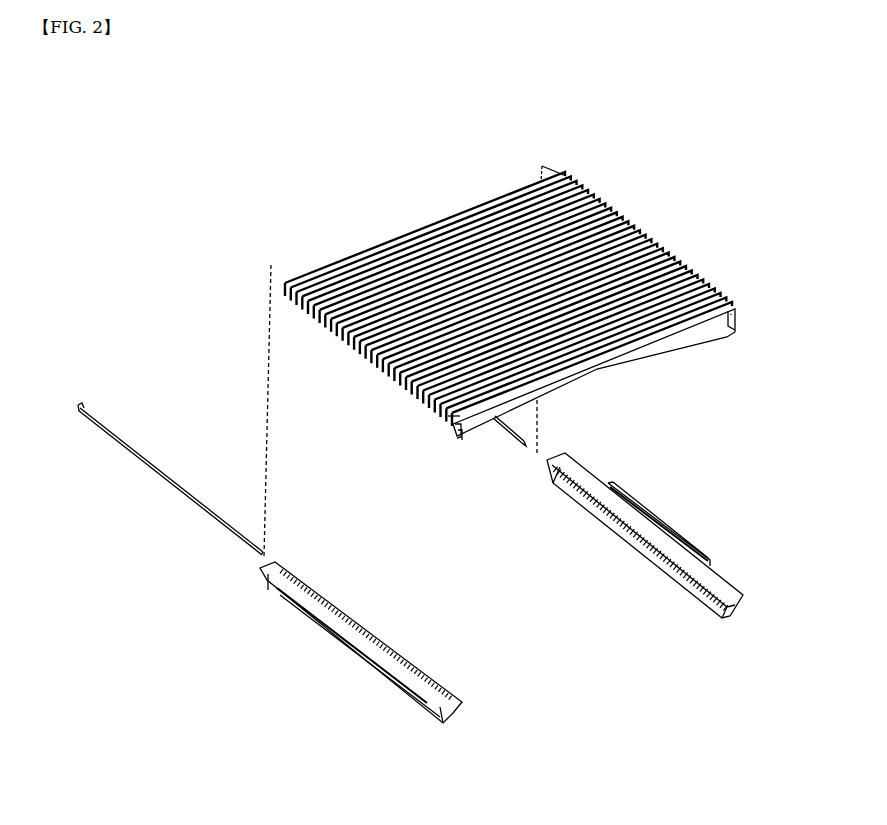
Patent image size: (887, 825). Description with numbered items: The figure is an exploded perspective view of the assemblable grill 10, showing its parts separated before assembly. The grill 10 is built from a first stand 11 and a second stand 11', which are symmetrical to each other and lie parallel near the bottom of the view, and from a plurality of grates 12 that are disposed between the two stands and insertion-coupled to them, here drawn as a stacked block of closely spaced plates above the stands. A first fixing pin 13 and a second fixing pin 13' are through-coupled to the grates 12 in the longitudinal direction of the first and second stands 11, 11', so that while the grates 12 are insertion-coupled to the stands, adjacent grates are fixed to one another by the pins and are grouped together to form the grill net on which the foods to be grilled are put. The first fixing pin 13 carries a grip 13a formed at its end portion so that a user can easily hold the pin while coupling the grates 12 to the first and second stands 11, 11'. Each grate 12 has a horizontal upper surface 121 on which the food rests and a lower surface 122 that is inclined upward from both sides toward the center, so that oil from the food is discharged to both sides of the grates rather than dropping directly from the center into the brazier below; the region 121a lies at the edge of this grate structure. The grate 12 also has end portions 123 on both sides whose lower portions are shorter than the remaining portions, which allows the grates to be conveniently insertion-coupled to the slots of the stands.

The assemblable grill 10 is at (173, 125).
The grates 12 is at (641, 204).
The horizontal upper surface 121 is at (640, 358).
The base plate edge portion 121a is at (452, 421).
The lower surface 122 is at (457, 432).
The end portions 123 is at (462, 440).
The first fixing pin 13 is at (171, 481).
The second fixing pin 13' is at (531, 426).
The grip 13a is at (80, 415).
The first stand 11 is at (359, 642).
The second stand 11' is at (645, 535).